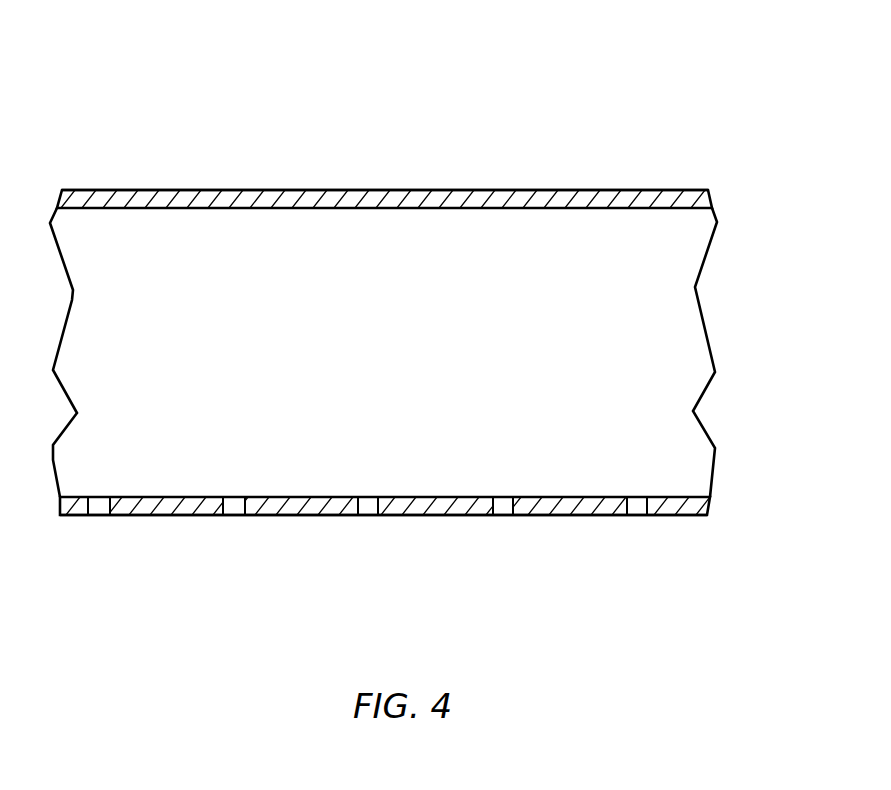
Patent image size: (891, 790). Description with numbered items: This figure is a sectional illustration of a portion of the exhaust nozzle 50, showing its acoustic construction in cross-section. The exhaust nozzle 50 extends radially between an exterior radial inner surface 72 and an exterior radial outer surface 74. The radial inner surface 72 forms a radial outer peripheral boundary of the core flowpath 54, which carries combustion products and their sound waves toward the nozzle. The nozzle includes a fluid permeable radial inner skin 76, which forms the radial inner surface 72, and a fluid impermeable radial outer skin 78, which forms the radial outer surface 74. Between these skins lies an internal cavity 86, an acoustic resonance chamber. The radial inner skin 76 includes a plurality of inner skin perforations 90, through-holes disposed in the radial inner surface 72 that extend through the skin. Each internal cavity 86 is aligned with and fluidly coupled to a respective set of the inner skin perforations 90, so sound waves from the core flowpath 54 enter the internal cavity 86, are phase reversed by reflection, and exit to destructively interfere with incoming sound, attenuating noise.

The exhaust nozzle 50 is at (439, 281).
The radial outer surface 74 is at (660, 190).
The radial outer skin 78 is at (722, 196).
The internal cavity 86 is at (345, 358).
The radial inner skin 76 is at (727, 502).
The radial inner surface 72 is at (673, 515).
The inner skin perforations 90 is at (229, 512).
The core flowpath 54 is at (317, 637).